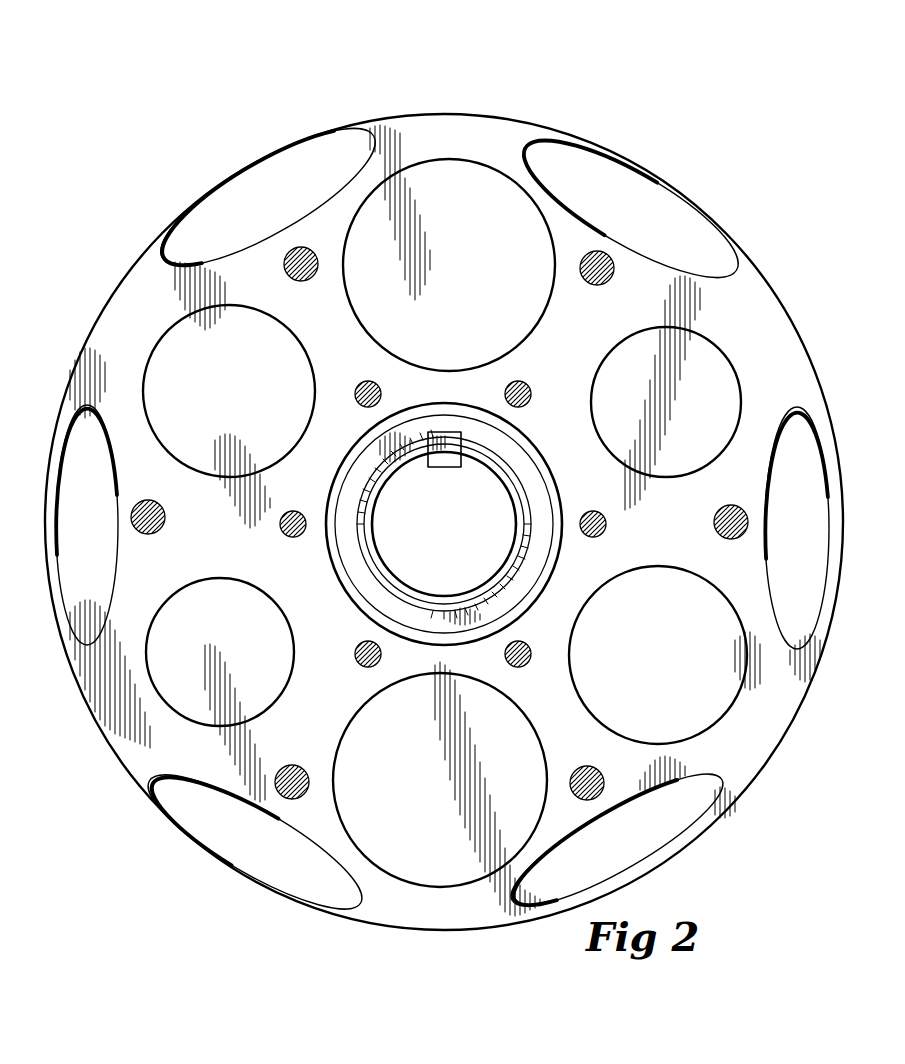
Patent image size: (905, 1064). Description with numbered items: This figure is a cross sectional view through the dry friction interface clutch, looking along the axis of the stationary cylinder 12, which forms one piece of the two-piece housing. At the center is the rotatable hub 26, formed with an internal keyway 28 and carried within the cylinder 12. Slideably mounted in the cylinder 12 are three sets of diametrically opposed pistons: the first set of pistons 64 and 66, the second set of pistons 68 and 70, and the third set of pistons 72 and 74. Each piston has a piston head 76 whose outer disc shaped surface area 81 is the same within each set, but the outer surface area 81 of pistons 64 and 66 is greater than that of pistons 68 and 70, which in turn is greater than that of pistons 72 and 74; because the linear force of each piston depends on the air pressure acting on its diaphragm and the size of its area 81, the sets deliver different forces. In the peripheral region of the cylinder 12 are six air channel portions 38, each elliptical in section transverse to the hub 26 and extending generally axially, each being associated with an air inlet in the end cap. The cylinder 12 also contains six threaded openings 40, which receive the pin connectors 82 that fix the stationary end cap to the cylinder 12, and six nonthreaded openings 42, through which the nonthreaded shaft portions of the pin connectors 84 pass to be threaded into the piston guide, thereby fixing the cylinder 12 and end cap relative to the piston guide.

The stationary cylinder 12 is at (424, 100).
The rotatable hub 26 is at (396, 549).
The internal keyway 28 is at (455, 440).
The air channel portions 38 is at (246, 182).
The threaded openings 40 is at (459, 527).
The nonthreaded openings 42 is at (443, 540).
The piston 64 is at (484, 148).
The piston 66 is at (428, 898).
The piston 68 is at (740, 728).
The piston 70 is at (128, 358).
The piston 72 is at (742, 342).
The piston 74 is at (140, 684).
The piston head 76 is at (180, 332).
The outer disc shaped surface area 81 is at (431, 529).
The pin connectors 82 is at (373, 382).
The pin connectors 84 is at (318, 274).